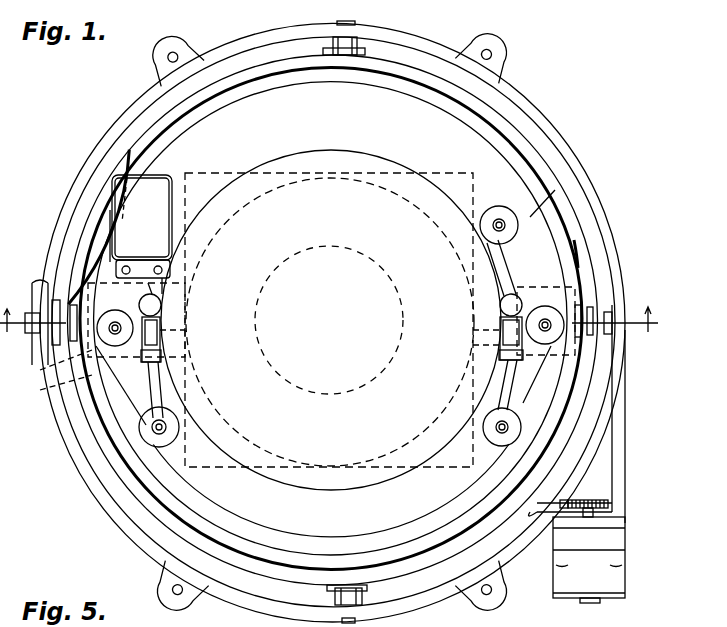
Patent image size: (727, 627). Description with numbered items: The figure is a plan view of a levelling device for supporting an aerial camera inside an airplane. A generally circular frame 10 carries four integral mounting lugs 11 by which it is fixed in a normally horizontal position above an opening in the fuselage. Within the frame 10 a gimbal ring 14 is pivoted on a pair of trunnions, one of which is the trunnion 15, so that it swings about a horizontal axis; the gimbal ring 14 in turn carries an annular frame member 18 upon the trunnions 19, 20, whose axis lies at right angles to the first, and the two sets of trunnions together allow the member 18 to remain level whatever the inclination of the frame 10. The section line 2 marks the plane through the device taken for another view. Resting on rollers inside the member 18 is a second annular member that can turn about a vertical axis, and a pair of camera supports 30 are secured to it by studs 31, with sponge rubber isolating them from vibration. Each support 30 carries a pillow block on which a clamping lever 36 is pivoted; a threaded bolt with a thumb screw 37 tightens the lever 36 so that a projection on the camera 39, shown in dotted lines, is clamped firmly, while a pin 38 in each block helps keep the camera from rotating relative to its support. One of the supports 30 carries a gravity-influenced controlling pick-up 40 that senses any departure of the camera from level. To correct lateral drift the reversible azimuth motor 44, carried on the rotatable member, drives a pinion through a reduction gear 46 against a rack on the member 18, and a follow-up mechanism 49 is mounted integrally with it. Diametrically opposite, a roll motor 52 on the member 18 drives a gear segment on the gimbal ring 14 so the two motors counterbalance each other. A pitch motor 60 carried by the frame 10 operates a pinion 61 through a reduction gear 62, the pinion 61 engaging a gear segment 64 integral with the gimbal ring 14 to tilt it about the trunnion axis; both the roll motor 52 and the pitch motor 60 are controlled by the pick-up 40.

The frame 10 is at (432, 588).
The mounting lugs 11 is at (176, 42).
The gimbal ring 14 is at (390, 587).
The trunnion 15 is at (352, 22).
The annular frame member 18 is at (116, 460).
The trunnion 19 is at (55, 330).
The section line 2 is at (334, 319).
The trunnion 20 is at (610, 327).
The camera supports 30 is at (138, 387).
The studs 31 is at (115, 322).
The clamping lever 36 is at (160, 337).
The thumb screw 37 is at (152, 305).
The pin 38 is at (186, 320).
The camera 39 is at (438, 467).
The controlling pick-up 40 is at (141, 234).
The azimuth motor 44 is at (70, 370).
The reduction gear 46 is at (283, 497).
The follow-up mechanism 49 is at (35, 290).
The roll motor 52 is at (578, 268).
The pitch motor 60 is at (610, 578).
The pinion 61 is at (592, 498).
The reduction gear 62 is at (612, 537).
The gear segment 64 is at (563, 498).